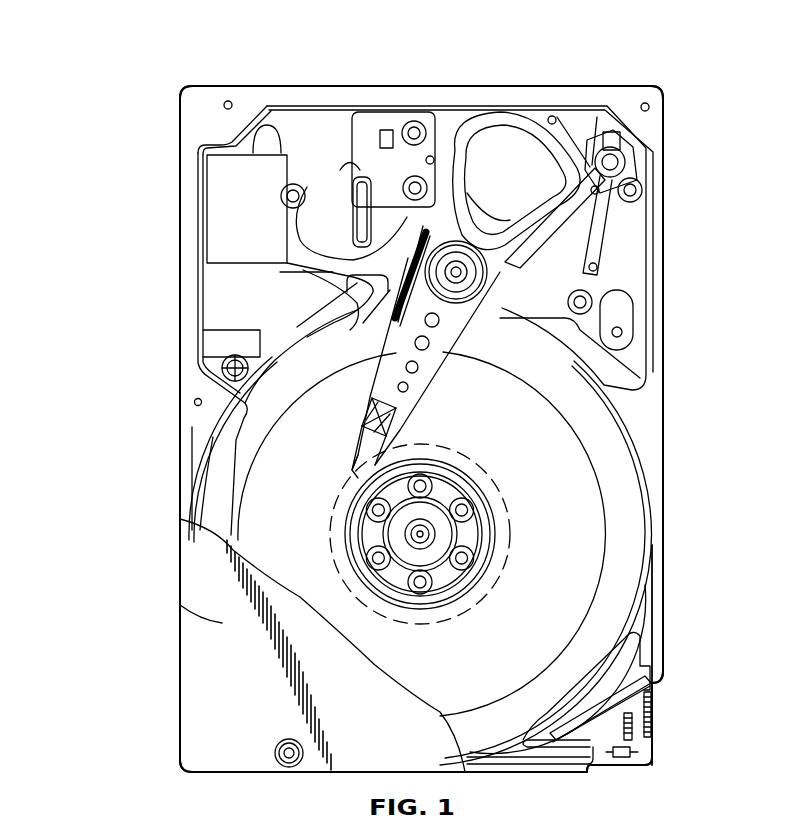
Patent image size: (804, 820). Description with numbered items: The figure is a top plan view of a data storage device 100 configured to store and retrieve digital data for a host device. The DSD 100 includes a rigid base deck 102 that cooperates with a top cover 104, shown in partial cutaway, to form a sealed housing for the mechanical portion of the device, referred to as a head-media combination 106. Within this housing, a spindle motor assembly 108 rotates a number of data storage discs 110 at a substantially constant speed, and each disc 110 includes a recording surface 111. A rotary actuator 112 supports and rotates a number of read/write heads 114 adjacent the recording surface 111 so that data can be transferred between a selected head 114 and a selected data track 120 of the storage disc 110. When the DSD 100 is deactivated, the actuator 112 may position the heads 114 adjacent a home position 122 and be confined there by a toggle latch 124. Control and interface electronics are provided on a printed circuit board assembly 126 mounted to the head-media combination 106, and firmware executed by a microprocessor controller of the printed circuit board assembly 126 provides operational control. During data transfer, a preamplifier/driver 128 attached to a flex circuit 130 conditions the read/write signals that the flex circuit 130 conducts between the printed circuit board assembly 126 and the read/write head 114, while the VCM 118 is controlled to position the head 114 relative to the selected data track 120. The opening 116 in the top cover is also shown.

The data storage device 100 is at (240, 68).
The rigid base deck 102 is at (190, 214).
The top cover 104 is at (222, 622).
The head-media combination 106 is at (672, 462).
The spindle motor assembly 108 is at (432, 522).
The data storage disc 110 is at (578, 540).
The recording surface 111 is at (567, 593).
The rotary actuator 112 is at (430, 395).
The read/write head 114 is at (357, 473).
The opening 116 is at (500, 130).
The VCM 118 is at (535, 105).
The data track 120 is at (200, 413).
The home position 122 is at (478, 606).
The toggle latch 124 is at (650, 130).
The printed circuit board assembly 126 is at (172, 432).
The preamplifier/driver 128 is at (410, 245).
The flex circuit 130 is at (420, 263).